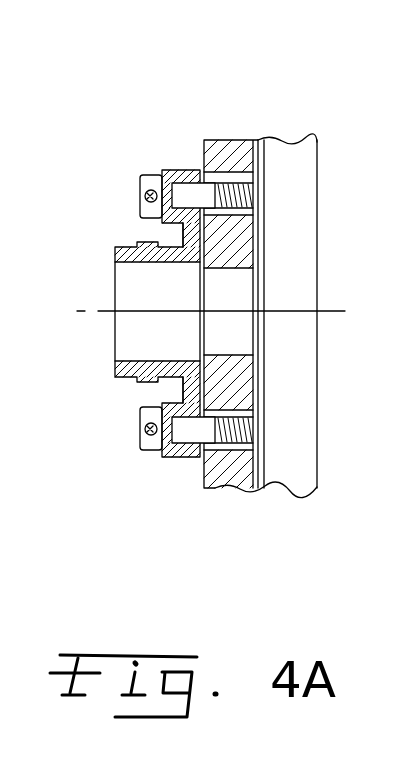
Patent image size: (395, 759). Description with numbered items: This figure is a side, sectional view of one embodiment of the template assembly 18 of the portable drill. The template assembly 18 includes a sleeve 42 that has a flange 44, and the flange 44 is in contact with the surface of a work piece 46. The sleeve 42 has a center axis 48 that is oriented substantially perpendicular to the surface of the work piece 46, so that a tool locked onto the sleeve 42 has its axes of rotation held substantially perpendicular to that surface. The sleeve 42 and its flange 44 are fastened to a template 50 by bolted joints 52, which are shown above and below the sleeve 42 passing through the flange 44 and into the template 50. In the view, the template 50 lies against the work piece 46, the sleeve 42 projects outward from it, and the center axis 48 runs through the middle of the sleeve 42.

The template assembly 18 is at (200, 516).
The sleeve 42 is at (135, 243).
The flange 44 is at (182, 392).
The work piece 46 is at (305, 248).
The center axis 48 is at (145, 310).
The template 50 is at (228, 147).
The bolted joints 52 is at (150, 175).